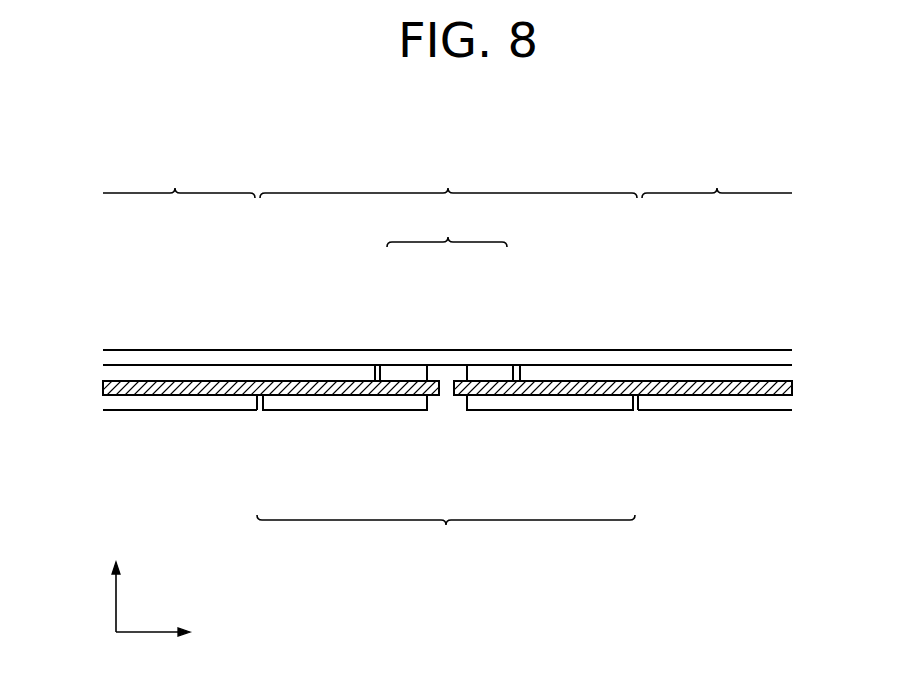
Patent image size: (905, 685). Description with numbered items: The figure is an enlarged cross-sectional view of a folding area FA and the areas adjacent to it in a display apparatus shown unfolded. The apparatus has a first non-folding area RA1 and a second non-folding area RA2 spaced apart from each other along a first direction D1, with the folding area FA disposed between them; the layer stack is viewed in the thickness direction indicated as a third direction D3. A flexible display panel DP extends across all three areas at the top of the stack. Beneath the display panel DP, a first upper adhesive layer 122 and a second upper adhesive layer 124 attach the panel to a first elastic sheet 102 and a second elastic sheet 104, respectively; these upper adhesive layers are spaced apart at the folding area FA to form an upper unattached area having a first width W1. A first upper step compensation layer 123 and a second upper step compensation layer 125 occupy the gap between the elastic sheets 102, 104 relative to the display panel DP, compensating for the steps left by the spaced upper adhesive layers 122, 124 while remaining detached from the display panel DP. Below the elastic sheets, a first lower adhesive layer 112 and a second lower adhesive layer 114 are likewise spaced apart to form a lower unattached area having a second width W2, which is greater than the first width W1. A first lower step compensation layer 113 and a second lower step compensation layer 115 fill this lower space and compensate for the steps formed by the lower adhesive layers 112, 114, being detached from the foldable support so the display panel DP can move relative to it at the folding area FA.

The display panel DP is at (785, 357).
The first elastic sheet 102 is at (108, 386).
The second elastic sheet 104 is at (785, 387).
The first lower adhesive layer 112 is at (202, 405).
The first lower step compensation layer 113 is at (340, 412).
The second lower adhesive layer 114 is at (716, 405).
The second lower step compensation layer 115 is at (548, 412).
The first upper adhesive layer 122 is at (143, 372).
The first upper step compensation layer 123 is at (402, 372).
The second upper adhesive layer 124 is at (658, 372).
The second upper step compensation layer 125 is at (487, 372).
The first non-folding area RA1 is at (179, 180).
The second non-folding area RA2 is at (717, 180).
The folding area FA is at (448, 180).
The first width W1 is at (447, 226).
The second width W2 is at (446, 534).
The first direction D1 is at (170, 632).
The third direction D3 is at (118, 582).